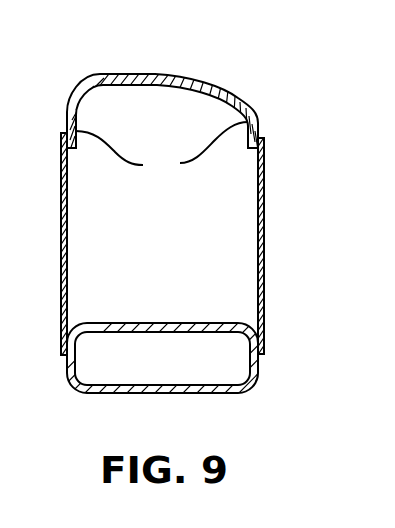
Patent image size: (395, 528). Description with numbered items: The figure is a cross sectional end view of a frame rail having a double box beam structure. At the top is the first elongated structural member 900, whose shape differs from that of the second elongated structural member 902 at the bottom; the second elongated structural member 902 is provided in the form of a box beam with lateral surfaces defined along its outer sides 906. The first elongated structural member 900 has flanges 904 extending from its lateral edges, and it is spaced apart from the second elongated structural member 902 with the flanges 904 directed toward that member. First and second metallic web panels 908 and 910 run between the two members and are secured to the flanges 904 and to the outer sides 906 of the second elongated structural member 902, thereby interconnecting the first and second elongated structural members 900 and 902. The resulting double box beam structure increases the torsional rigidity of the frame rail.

The first elongated structural member 900 is at (133, 74).
The second elongated structural member 902 is at (187, 396).
The flanges 904 is at (162, 147).
The outer sides 906 is at (64, 358).
The first metallic web panel 908 is at (61, 298).
The second metallic web panel 910 is at (264, 163).